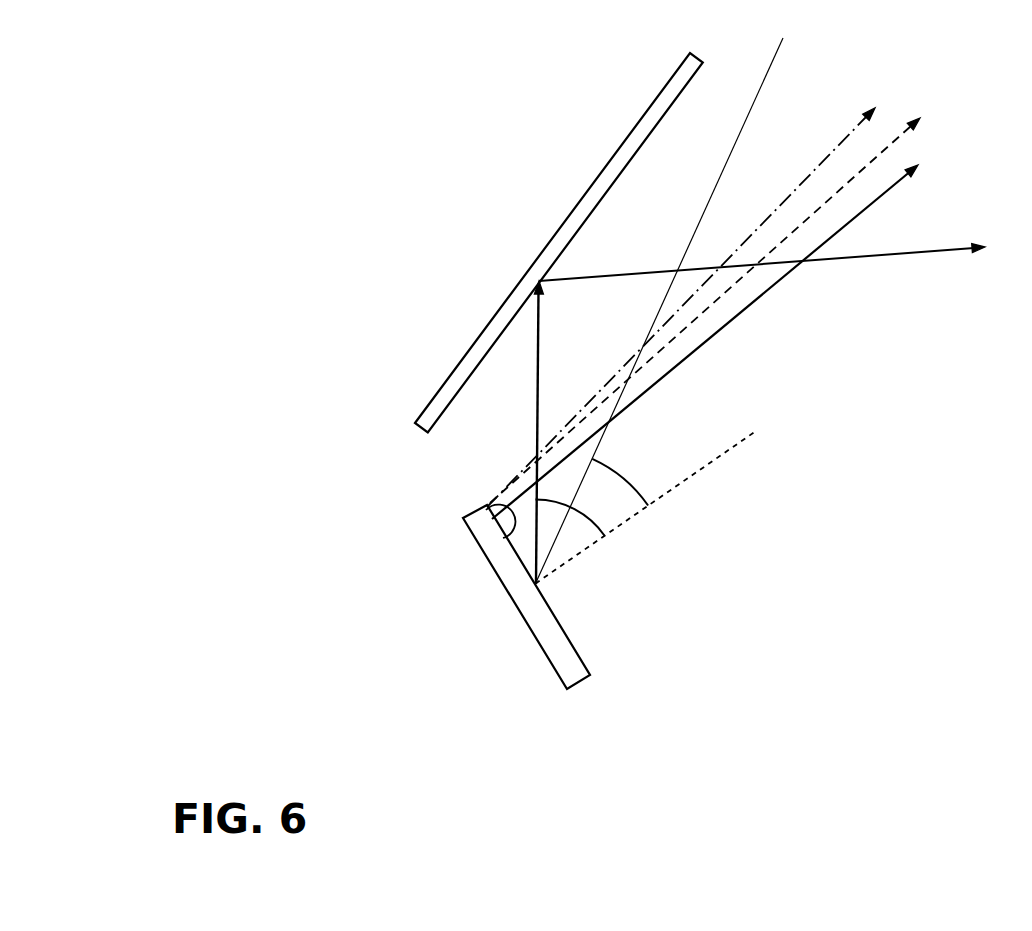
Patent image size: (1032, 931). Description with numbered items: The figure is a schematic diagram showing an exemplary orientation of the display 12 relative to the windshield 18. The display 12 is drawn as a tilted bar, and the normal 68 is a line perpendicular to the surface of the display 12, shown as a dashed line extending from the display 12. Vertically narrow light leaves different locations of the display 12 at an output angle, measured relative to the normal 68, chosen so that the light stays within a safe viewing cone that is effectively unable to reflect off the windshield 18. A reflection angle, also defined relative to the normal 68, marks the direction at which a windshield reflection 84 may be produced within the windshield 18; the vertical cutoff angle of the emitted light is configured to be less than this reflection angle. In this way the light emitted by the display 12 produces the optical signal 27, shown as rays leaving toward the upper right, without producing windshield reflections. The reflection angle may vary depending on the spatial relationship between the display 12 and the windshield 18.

The display 12 is at (532, 632).
The windshield 18 is at (606, 165).
The optical signal 27 is at (921, 107).
The normal 68 is at (743, 442).
The windshield reflection 84 is at (610, 275).